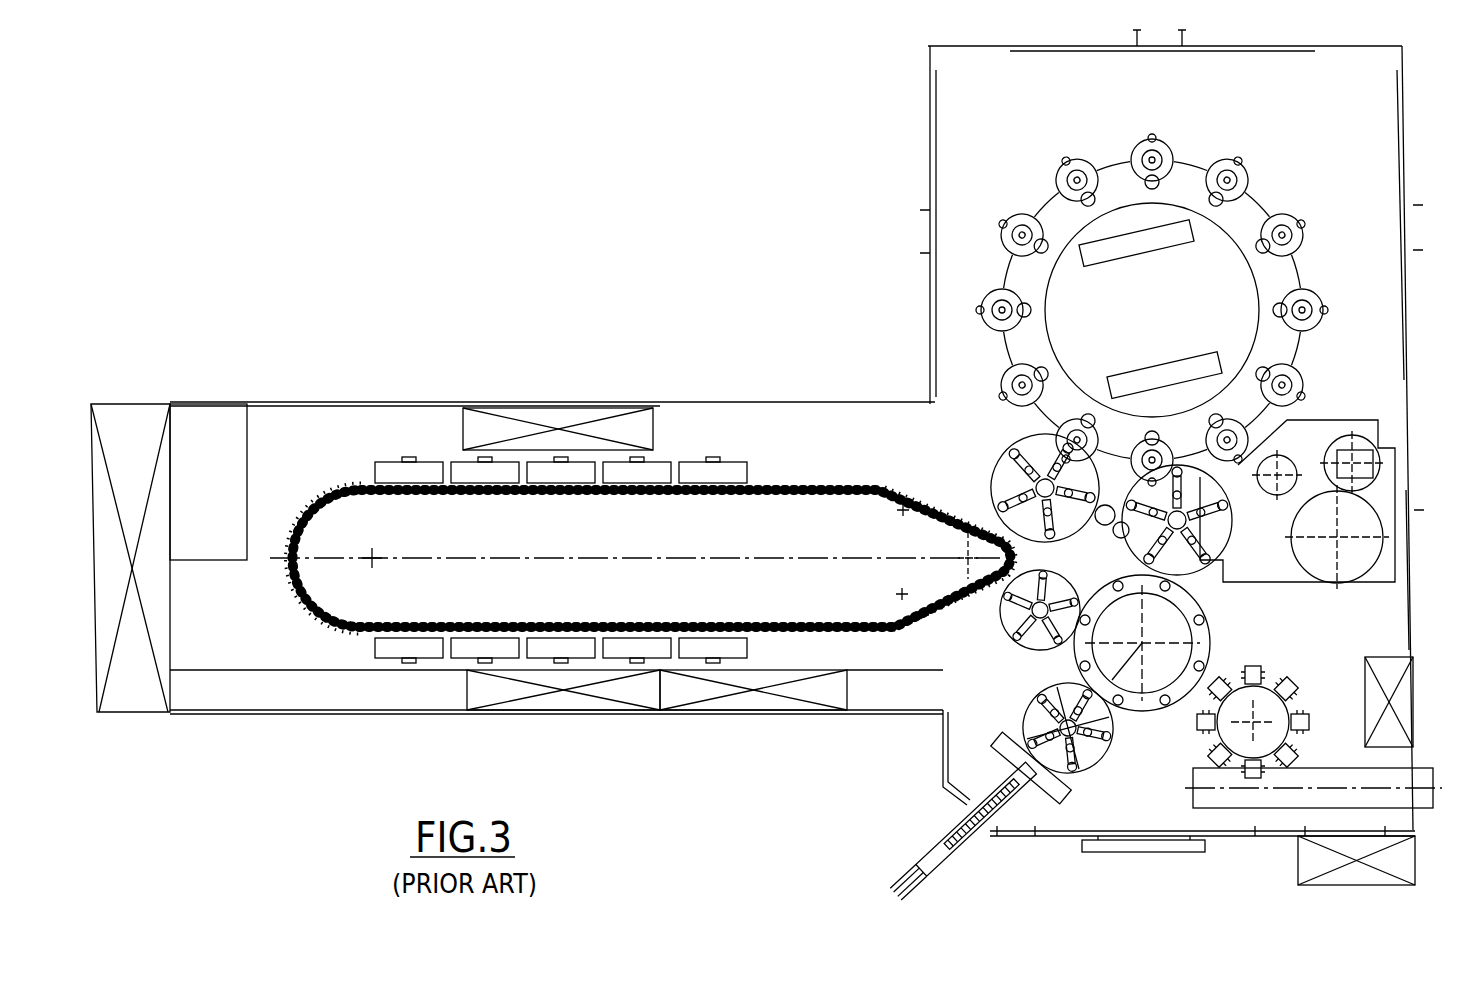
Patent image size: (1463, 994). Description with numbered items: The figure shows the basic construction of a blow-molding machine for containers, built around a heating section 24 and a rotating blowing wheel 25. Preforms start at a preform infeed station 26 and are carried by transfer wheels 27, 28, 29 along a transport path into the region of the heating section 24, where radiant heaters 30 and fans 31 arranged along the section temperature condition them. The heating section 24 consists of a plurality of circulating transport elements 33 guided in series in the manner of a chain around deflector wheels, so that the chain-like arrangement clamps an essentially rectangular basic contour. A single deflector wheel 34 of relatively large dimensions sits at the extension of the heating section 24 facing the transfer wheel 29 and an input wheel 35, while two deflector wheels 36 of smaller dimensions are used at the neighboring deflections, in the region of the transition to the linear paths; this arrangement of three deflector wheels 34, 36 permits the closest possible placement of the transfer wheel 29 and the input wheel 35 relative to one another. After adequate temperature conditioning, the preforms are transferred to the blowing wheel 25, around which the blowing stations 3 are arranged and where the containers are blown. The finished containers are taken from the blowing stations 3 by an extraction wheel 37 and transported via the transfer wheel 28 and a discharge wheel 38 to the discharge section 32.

The blowing station 3 is at (985, 288).
The heating section 24 is at (704, 440).
The blowing wheel 25 is at (1078, 232).
The preform infeed station 26 is at (978, 840).
The transfer wheel 27 is at (1090, 775).
The transfer wheel 28 is at (1146, 712).
The transfer wheel 29 is at (1012, 645).
The radiant heater 30 is at (423, 467).
The fan 31 is at (552, 415).
The discharge section 32 is at (1420, 795).
The transport element 33 is at (343, 625).
The deflector wheel 34 is at (372, 562).
The input wheel 35 is at (1032, 438).
The deflector wheel 36 is at (903, 510).
The extraction wheel 37 is at (1232, 542).
The discharge wheel 38 is at (1267, 737).